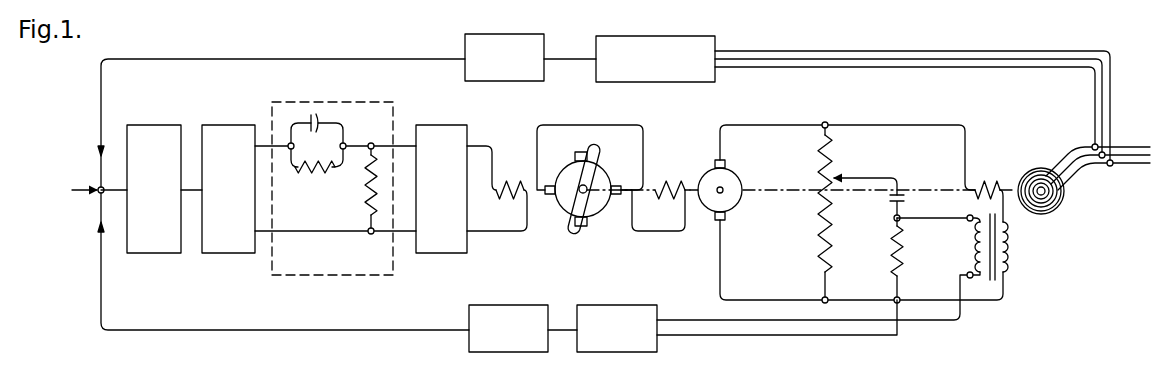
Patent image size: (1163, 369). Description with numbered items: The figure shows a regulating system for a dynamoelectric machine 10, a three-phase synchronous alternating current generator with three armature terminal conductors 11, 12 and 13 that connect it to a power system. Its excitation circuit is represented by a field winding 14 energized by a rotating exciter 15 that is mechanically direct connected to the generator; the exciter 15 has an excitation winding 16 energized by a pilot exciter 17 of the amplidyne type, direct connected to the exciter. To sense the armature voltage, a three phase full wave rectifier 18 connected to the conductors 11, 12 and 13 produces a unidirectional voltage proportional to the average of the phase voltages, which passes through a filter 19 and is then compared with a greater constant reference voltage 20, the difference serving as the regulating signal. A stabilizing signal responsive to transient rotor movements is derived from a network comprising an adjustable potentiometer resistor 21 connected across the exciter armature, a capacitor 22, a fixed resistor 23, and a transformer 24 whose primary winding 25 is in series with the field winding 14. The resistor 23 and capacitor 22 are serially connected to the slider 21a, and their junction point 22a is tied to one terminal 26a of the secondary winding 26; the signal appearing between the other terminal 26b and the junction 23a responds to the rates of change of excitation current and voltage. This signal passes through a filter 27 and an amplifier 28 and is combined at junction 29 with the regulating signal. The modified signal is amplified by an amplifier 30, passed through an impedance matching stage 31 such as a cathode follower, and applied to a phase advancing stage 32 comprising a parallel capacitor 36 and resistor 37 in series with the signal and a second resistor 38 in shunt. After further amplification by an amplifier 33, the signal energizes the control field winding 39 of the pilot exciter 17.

The dynamoelectric machine 10 is at (1058, 205).
The armature terminal conductor 11 is at (1127, 146).
The armature terminal conductor 12 is at (1110, 172).
The armature terminal conductor 13 is at (1130, 165).
The field winding 14 is at (984, 178).
The rotating exciter 15 is at (742, 180).
The excitation winding 16 is at (665, 180).
The pilot exciter 17 is at (606, 178).
The three phase full wave rectifier 18 is at (646, 36).
The filter 19 is at (504, 34).
The reference voltage 20 is at (95, 188).
The adjustable potentiometer resistor 21 is at (816, 219).
The slider 21a is at (840, 178).
The capacitor 22 is at (889, 201).
The junction point 22a is at (893, 222).
The fixed resistor 23 is at (890, 251).
The junction 23a is at (893, 299).
The transformer 24 is at (992, 282).
The primary winding 25 is at (1010, 247).
The secondary winding 26 is at (972, 247).
The terminal 26a is at (967, 216).
The terminal 26b is at (967, 274).
The filter 27 is at (625, 305).
The amplifier 28 is at (520, 305).
The junction 29 is at (98, 193).
The amplifier 30 is at (154, 125).
The impedance matching stage 31 is at (226, 125).
The phase advancing stage 32 is at (332, 181).
The amplifier 33 is at (440, 125).
The capacitor 36 is at (318, 116).
The resistor 37 is at (314, 172).
The second resistor 38 is at (366, 200).
The control field winding 39 is at (506, 180).